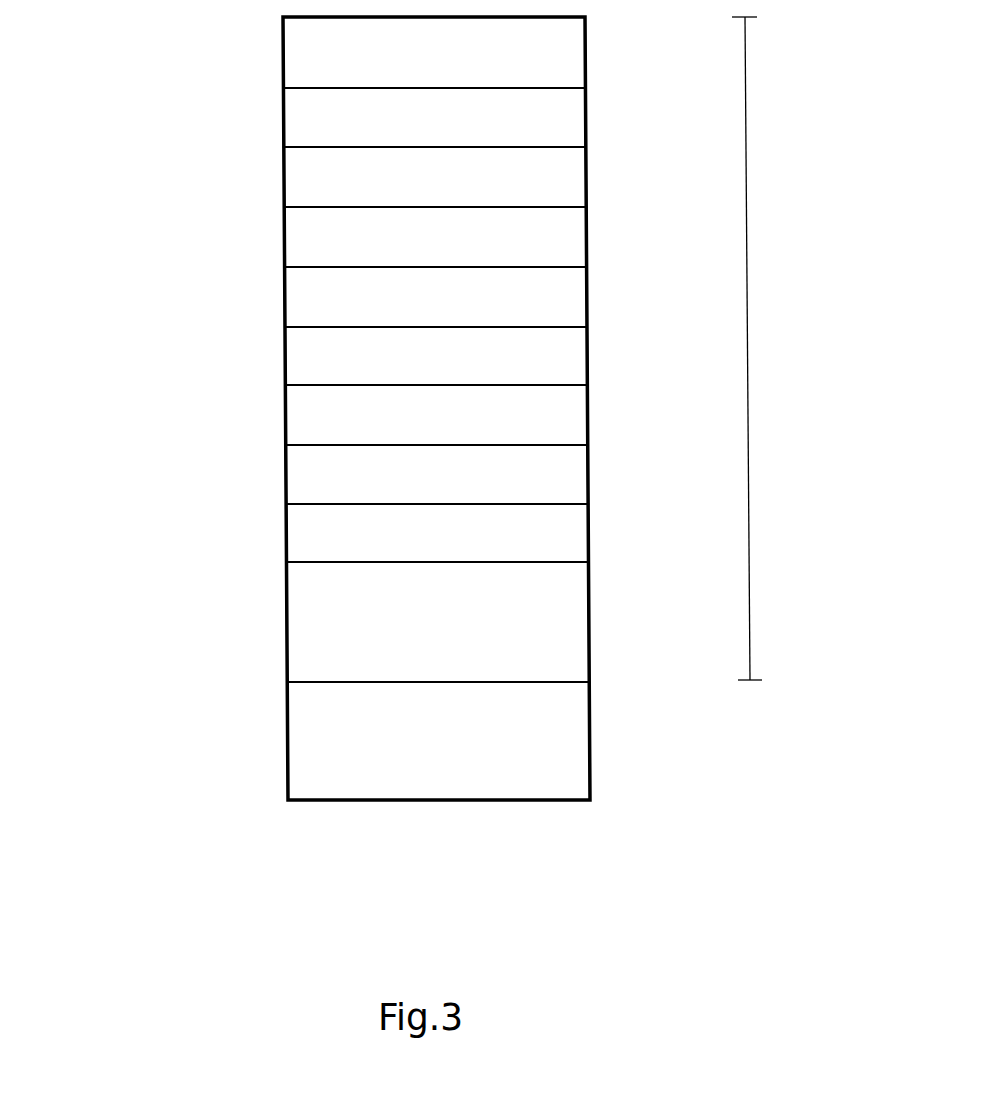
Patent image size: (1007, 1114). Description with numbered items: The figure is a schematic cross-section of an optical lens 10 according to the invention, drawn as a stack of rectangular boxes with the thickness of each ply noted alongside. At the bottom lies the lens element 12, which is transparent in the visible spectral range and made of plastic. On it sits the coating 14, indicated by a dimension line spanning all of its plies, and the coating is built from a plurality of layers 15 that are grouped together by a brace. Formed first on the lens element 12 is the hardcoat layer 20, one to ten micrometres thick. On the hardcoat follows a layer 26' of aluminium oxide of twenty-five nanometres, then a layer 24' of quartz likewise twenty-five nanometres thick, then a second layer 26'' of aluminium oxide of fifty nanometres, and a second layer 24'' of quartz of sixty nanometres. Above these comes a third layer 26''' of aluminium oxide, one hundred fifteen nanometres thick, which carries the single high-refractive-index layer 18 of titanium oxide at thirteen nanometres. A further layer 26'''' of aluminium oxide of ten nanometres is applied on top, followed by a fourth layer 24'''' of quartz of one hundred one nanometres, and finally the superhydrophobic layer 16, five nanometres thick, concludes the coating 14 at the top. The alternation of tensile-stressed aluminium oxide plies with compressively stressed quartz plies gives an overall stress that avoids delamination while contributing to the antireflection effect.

The optical lens 10 is at (240, 854).
The lens element 12 is at (303, 757).
The coating 14 is at (748, 477).
The layers 15 is at (280, 17).
The superhydrophobic layer 16 is at (300, 58).
The high-refractive-index layer 18 is at (300, 245).
The hardcoat layer 20 is at (303, 620).
The layer of quartz 24' is at (390, 474).
The second layer of quartz 24'' is at (388, 356).
The fourth layer of quartz 24'''' is at (384, 117).
The layer of aluminium oxide 26' is at (390, 533).
The second layer of aluminium oxide 26'' is at (389, 415).
The third layer of aluminium oxide 26''' is at (386, 297).
The further layer of aluminium oxide 26'''' is at (384, 177).